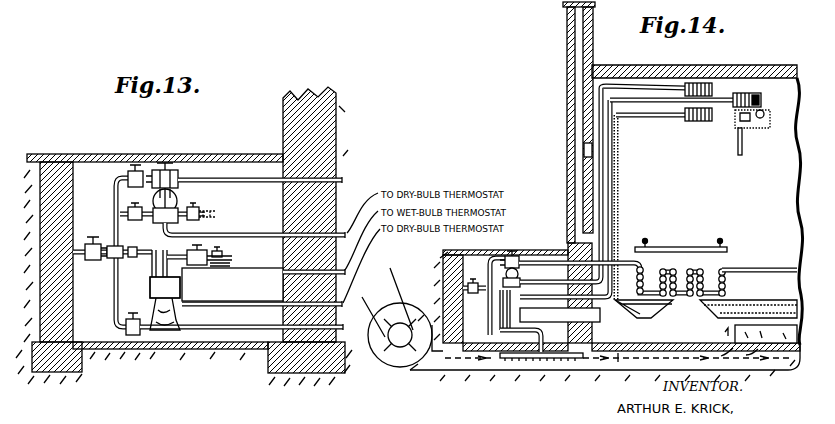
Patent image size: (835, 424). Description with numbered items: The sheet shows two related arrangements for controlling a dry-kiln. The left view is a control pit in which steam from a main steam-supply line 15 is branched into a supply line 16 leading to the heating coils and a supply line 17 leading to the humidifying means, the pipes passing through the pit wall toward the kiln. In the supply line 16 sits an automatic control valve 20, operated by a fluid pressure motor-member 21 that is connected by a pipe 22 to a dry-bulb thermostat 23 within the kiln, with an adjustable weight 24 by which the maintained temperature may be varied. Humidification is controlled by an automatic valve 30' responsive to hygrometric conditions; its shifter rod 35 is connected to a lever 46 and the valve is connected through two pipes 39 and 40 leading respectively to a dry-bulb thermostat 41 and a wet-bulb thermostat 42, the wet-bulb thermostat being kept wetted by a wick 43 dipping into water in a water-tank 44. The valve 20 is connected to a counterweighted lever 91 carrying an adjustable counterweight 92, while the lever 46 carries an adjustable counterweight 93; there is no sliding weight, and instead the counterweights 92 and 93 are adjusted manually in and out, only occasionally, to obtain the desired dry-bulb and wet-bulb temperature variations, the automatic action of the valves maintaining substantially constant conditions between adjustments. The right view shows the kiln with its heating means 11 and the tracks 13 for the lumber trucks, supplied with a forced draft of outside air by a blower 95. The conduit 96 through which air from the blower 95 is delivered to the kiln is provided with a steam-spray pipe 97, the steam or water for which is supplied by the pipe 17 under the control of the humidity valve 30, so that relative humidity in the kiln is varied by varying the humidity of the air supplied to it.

In FIG. 14, the heating means 11 is at (762, 268).
In FIG. 14, the tracks 13 is at (723, 241).
In FIG. 13, the main steam-supply line 15 is at (79, 256).
In FIG. 14, the main steam-supply line 15 is at (472, 291).
In FIG. 13, the supply line 16 is at (218, 177).
In FIG. 14, the supply line 16 is at (629, 261).
In FIG. 13, the supply line 17 is at (258, 331).
In FIG. 14, the supply line 17 is at (537, 329).
In FIG. 13, the control valve 20 is at (178, 160).
In FIG. 14, the control valve 20 is at (520, 261).
In FIG. 14, the fluid pressure motor-member 21 is at (525, 268).
In FIG. 13, the pipe 22 is at (258, 228).
In FIG. 14, the pipe 22 is at (624, 85).
In FIG. 14, the dry-bulb thermostat 23 is at (703, 83).
In FIG. 14, the adjustable weight 24 is at (526, 283).
In FIG. 14, the humidity valve 30 is at (482, 378).
In FIG. 13, the automatic valve 30' is at (165, 320).
In FIG. 13, the shifter rod 35 is at (152, 268).
In FIG. 13, the pipe 39 is at (235, 307).
In FIG. 13, the pipe 40 is at (256, 270).
In FIG. 14, the dry-bulb thermostat 41 is at (698, 121).
In FIG. 14, the wet-bulb thermostat 42 is at (758, 105).
In FIG. 14, the wick 43 is at (750, 93).
In FIG. 14, the water-tank 44 is at (766, 130).
In FIG. 13, the lever 46 is at (232, 259).
In FIG. 13, the counterweighted lever 91 is at (215, 214).
In FIG. 13, the adjustable counterweight 92 is at (199, 210).
In FIG. 13, the adjustable counterweight 93 is at (187, 254).
In FIG. 14, the blower 95 is at (417, 366).
In FIG. 14, the conduit 96 is at (618, 362).
In FIG. 14, the steam-spray pipe 97 is at (531, 361).